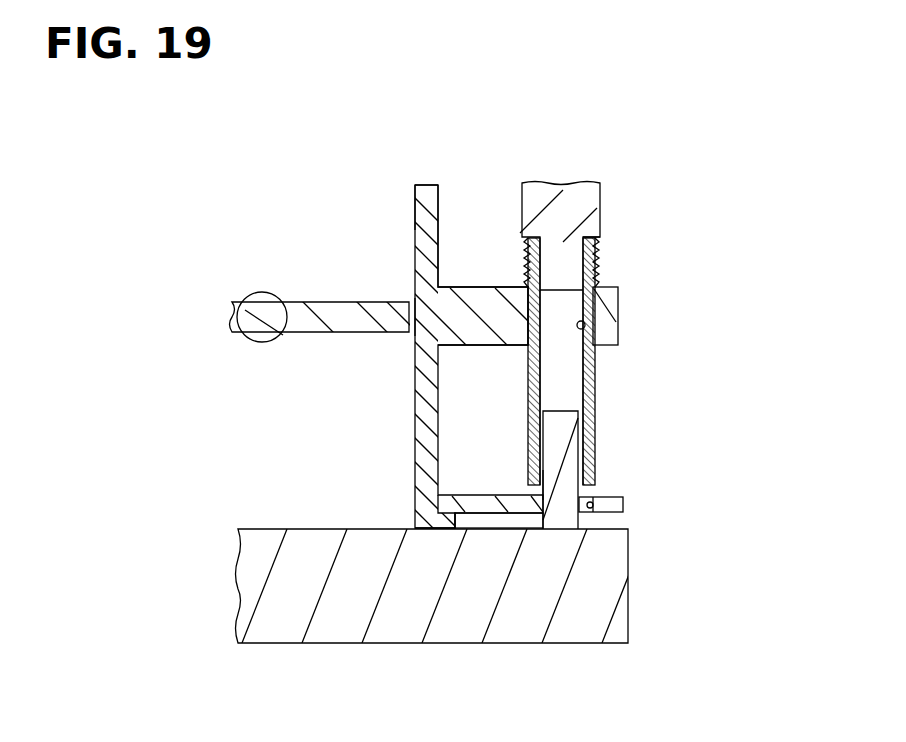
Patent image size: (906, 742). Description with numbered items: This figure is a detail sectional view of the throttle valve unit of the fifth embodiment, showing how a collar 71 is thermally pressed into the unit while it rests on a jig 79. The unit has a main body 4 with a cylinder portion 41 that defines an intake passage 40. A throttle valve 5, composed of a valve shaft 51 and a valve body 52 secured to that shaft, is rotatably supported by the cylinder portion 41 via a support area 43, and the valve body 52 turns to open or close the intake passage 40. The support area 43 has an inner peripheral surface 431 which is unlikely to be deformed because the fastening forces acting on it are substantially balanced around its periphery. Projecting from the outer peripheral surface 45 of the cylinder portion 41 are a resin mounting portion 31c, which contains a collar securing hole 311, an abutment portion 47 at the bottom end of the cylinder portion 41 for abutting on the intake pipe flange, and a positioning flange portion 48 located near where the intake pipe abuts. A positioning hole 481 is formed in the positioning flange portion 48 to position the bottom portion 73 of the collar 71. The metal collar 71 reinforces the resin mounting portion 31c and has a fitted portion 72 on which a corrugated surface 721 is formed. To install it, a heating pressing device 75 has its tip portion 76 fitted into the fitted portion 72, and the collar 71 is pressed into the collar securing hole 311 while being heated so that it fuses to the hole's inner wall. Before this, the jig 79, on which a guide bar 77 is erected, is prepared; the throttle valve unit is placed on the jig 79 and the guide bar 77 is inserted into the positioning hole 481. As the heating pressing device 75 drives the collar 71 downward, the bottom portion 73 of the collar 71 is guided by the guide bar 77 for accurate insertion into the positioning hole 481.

The main body 4 is at (447, 183).
The throttle valve 5 is at (293, 265).
The intake passage 40 is at (357, 228).
The cylinder portion 41 is at (424, 208).
The support area 43 is at (444, 327).
The outer peripheral surface 45 is at (443, 237).
The abutment portion 47 is at (442, 512).
The positioning flange portion 48 is at (493, 515).
The valve shaft 51 is at (245, 310).
The valve body 52 is at (334, 309).
The collar 71 is at (596, 382).
The fitted portion 72 is at (593, 263).
The bottom portion 73 is at (592, 477).
The heating pressing device 75 is at (561, 205).
The tip portion 76 is at (540, 268).
The guide bar 77 is at (563, 458).
The jig 79 is at (610, 598).
The collar securing hole 311 is at (592, 328).
The mounting portion 31c is at (612, 301).
The inner peripheral surface 431 is at (404, 326).
The positioning hole 481 is at (593, 506).
The corrugated surface 721 is at (524, 262).